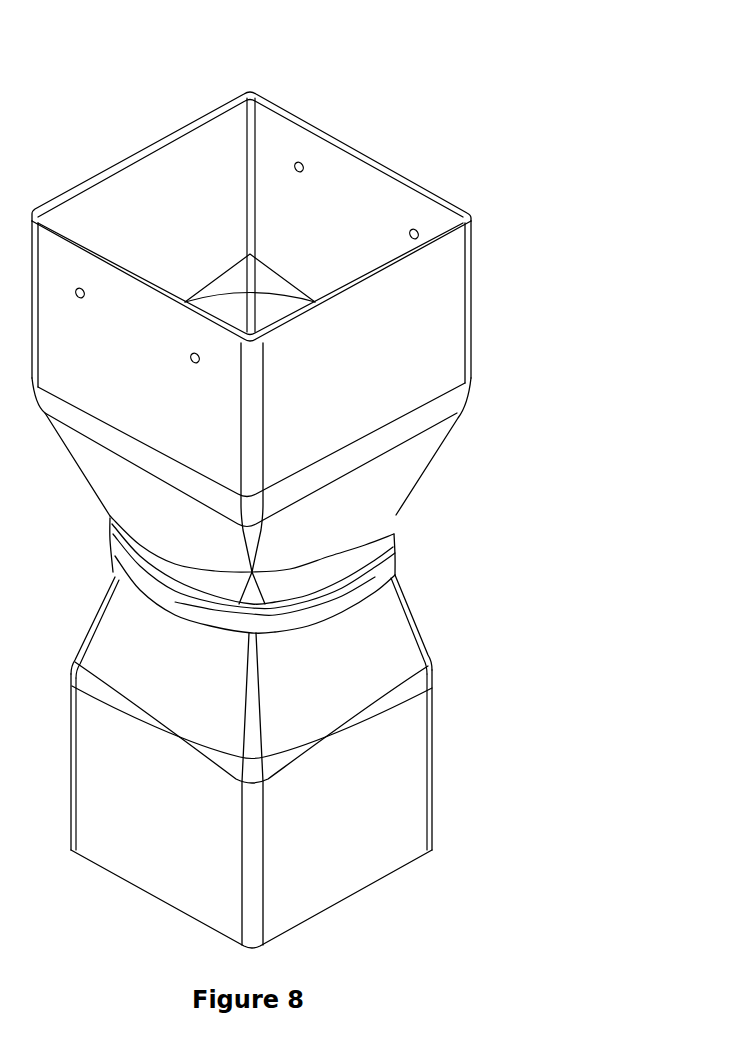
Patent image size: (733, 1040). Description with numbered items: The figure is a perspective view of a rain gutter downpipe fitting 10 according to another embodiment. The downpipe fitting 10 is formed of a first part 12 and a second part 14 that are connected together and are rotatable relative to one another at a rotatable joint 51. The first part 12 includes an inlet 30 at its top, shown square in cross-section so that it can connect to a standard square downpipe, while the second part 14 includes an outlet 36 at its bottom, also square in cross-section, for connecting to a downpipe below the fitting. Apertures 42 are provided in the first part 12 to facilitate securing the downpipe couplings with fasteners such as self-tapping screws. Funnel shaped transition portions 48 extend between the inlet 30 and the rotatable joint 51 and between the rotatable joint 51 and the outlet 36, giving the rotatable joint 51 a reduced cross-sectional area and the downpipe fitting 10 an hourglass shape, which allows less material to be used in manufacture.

The rain gutter downpipe fitting 10 is at (582, 111).
The first part 12 is at (455, 301).
The second part 14 is at (412, 792).
The inlet 30 is at (170, 136).
The outlet 36 is at (116, 870).
The apertures 42 is at (302, 176).
The transition portions 48 is at (392, 484).
The rotatable joint 51 is at (397, 556).